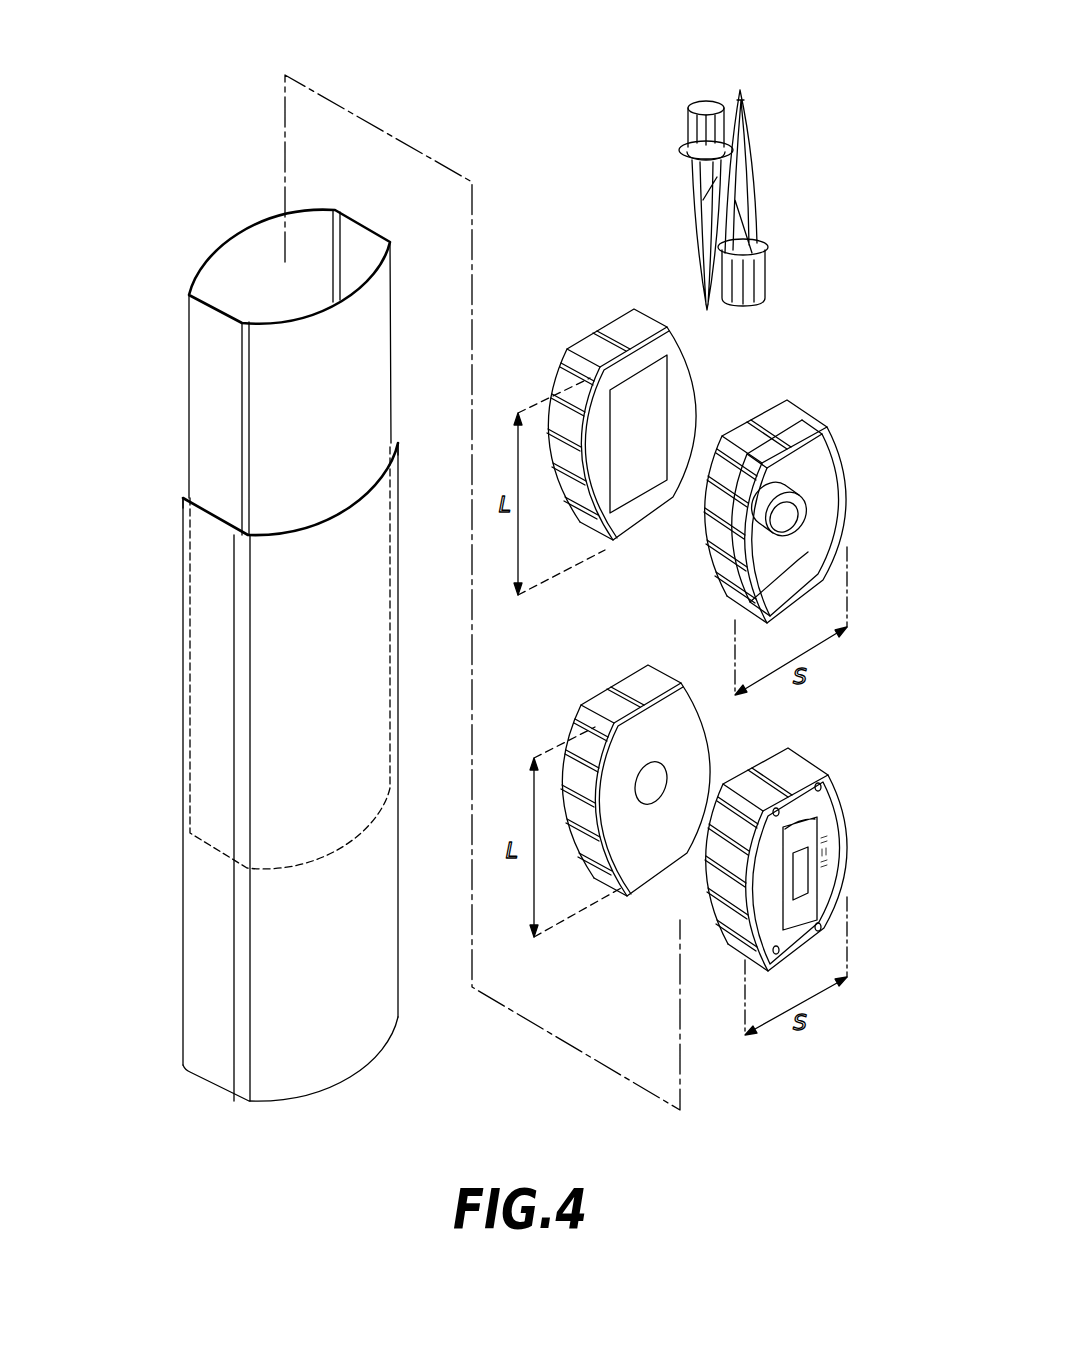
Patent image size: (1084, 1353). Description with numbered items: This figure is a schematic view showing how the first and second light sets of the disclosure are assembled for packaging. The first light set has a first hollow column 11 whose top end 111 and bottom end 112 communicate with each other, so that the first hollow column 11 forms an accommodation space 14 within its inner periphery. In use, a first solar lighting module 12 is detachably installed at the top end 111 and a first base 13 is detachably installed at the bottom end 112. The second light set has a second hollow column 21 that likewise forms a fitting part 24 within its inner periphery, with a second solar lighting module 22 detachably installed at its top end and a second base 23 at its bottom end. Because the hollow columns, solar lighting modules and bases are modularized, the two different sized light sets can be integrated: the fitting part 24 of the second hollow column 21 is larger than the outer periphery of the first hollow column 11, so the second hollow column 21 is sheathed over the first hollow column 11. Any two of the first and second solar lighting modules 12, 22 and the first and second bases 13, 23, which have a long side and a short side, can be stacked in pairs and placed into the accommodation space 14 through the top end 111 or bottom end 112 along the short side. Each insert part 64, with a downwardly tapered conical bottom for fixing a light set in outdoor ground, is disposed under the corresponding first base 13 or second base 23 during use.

The first hollow column 11 is at (275, 539).
The first solar lighting module 12 is at (832, 760).
The first base 13 is at (592, 680).
The accommodation space 14 is at (212, 285).
The second hollow column 21 is at (250, 770).
The second solar lighting module 22 is at (612, 310).
The second base 23 is at (826, 407).
The fitting part 24 is at (187, 493).
The insert part 64 is at (692, 222).
The top end 111 is at (392, 280).
The bottom end 112 is at (392, 760).